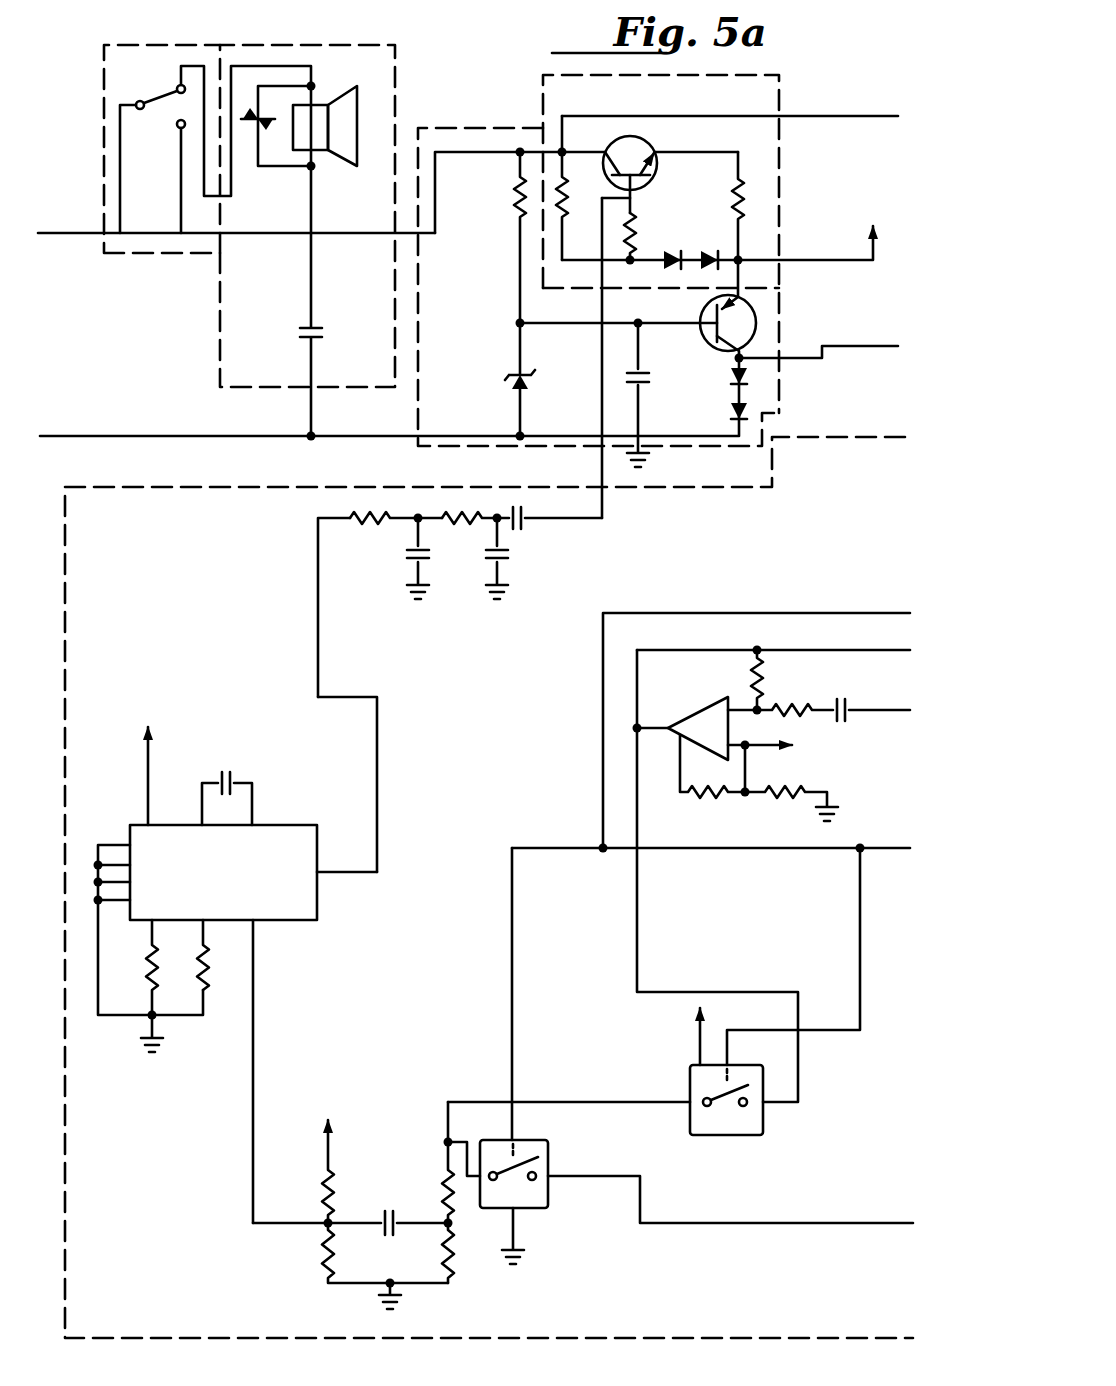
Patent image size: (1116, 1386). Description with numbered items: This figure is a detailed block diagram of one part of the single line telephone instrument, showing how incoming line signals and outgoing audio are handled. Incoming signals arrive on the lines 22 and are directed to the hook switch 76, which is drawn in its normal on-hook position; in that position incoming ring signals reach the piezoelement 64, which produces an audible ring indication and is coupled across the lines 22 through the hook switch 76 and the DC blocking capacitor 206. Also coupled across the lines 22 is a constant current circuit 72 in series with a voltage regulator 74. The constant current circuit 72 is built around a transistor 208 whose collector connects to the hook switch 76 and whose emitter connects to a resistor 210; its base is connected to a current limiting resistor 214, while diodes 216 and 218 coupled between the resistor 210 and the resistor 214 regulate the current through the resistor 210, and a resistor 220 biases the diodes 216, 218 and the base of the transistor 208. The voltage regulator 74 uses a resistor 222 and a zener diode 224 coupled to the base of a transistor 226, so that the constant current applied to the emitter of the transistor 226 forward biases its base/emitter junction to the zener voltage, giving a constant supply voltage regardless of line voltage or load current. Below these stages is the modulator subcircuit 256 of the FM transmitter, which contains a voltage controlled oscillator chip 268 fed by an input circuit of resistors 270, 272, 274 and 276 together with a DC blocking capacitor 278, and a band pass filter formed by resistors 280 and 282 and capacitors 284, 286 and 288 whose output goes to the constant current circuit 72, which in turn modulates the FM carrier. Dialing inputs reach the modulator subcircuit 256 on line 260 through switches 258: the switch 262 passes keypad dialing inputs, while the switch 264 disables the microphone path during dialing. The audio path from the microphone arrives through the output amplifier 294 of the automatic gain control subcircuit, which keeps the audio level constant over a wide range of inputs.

The lines 22 is at (55, 233).
The piezoelement 64 is at (351, 242).
The constant current circuit 72 is at (708, 244).
The voltage regulator 74 is at (658, 296).
The hook switch 76 is at (100, 100).
The DC blocking capacitor 206 is at (322, 332).
The transistor 208 is at (643, 152).
The resistor 210 is at (735, 208).
The current limiting resistor 214 is at (640, 225).
The diode 216 is at (676, 270).
The diode 218 is at (710, 252).
The resistor 220 is at (585, 188).
The resistor 222 is at (513, 196).
The zener diode 224 is at (510, 378).
The transistor 226 is at (742, 321).
The modulator subcircuit 256 is at (417, 661).
The switches 258 is at (679, 1054).
The line 260 is at (765, 1225).
The switch 262 is at (546, 1163).
The switch 264 is at (723, 1123).
The voltage controlled oscillator chip 268 is at (276, 832).
The resistor 270 is at (322, 1196).
The resistor 272 is at (326, 1250).
The resistor 274 is at (445, 1172).
The resistor 276 is at (457, 1252).
The DC blocking capacitor 278 is at (390, 1210).
The resistor 280 is at (374, 512).
The resistor 282 is at (474, 512).
The capacitor 284 is at (405, 557).
The capacitor 286 is at (506, 556).
The capacitor 288 is at (528, 526).
The output amplifier 294 is at (708, 715).